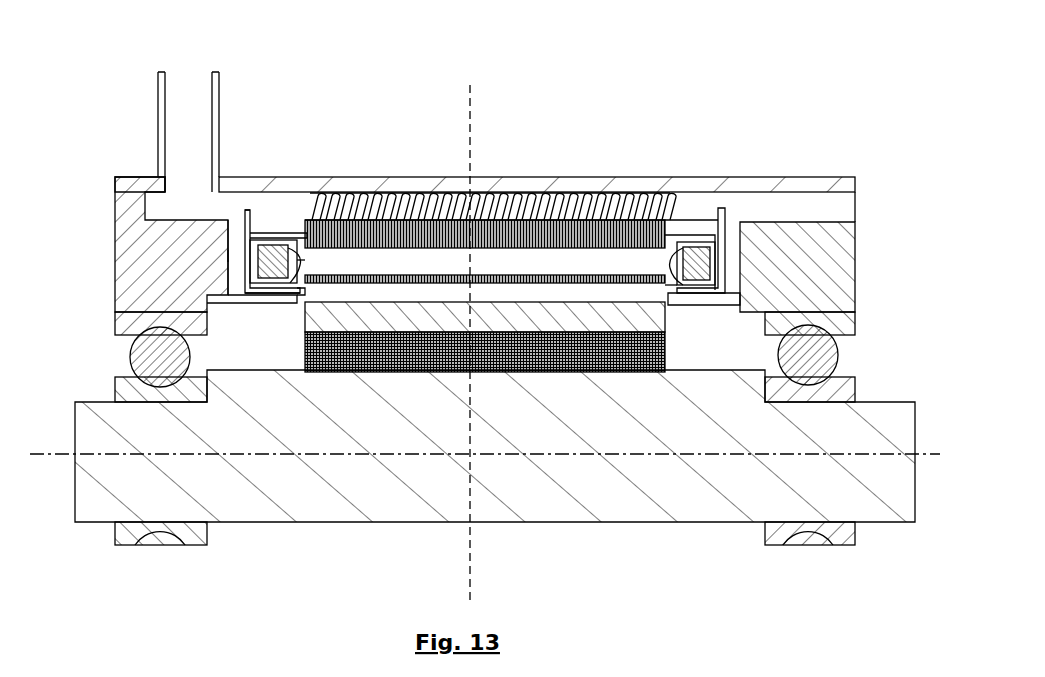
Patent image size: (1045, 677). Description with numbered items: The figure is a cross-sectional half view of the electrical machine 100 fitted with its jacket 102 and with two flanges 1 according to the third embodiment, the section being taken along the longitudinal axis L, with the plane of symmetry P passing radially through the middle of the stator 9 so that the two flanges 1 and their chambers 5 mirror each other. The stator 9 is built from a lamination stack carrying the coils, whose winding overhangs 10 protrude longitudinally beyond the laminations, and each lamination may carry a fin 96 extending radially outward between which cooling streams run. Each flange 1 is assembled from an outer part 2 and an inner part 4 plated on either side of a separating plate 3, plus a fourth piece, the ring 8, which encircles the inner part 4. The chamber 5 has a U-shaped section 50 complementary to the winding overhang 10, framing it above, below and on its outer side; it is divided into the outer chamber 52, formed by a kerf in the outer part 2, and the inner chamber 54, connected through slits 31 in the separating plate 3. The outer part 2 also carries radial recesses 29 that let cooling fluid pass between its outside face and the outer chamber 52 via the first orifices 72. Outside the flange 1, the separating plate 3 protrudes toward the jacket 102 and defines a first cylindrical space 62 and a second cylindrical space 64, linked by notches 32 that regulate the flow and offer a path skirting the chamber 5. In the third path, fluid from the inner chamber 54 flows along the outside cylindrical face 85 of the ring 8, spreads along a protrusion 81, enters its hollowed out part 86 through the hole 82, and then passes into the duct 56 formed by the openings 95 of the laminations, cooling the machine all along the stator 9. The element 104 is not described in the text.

The flange 1 is at (128, 282).
The outer part 2 is at (818, 192).
The separating plate 3 is at (248, 218).
The inner part 4 is at (690, 210).
The chamber 5 is at (738, 284).
The ring 8 is at (727, 177).
The stator 9 is at (580, 195).
The winding overhang 10 is at (708, 272).
The recess 29 is at (230, 240).
The slit 31 is at (232, 292).
The notch 32 is at (718, 207).
The U-shaped section 50 is at (718, 296).
The outer chamber 52 is at (232, 265).
The inner chamber 54 is at (267, 296).
The duct 56 is at (618, 258).
The first cylindrical space 62 is at (160, 213).
The second cylindrical space 64 is at (262, 208).
The first orifice 72 is at (230, 216).
The protrusion 81 is at (312, 262).
The hole 82 is at (297, 243).
The outside cylindrical face 85 is at (662, 235).
The hollowed out part 86 is at (300, 252).
The opening 95 is at (570, 278).
The fin 96 is at (497, 196).
The electrical machine 100 is at (123, 128).
The jacket 102 is at (428, 190).
The cover post 104 is at (165, 208).
The plane of symmetry P is at (470, 115).
The longitudinal axis L is at (75, 454).